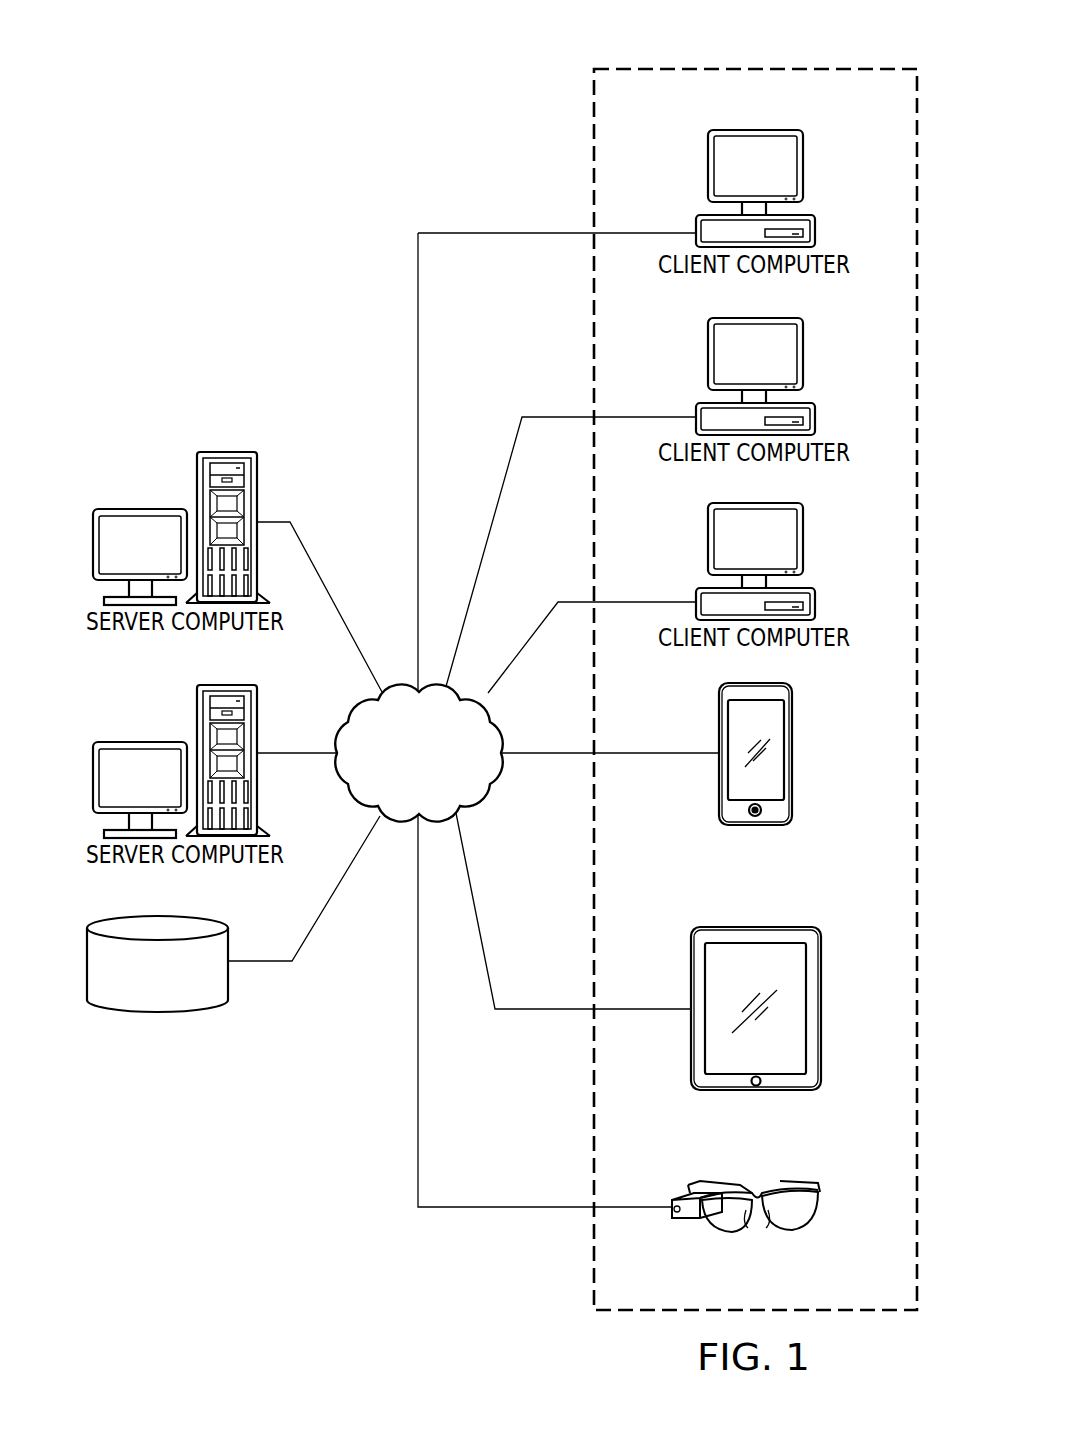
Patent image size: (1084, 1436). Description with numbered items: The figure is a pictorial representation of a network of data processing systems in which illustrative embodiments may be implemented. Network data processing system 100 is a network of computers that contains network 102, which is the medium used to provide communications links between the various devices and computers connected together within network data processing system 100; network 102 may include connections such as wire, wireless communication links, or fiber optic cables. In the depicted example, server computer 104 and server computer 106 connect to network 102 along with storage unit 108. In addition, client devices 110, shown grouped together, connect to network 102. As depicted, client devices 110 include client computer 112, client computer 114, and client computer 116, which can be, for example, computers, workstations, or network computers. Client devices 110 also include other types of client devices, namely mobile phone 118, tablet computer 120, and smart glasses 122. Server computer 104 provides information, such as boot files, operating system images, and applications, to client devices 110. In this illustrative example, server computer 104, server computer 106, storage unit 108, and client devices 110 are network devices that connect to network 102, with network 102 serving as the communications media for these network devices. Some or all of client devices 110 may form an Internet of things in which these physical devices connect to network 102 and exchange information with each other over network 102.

The network data processing system 100 is at (285, 326).
The network 102 is at (440, 787).
The server computer 104 is at (140, 509).
The server computer 106 is at (142, 742).
The storage unit 108 is at (155, 1012).
The client devices 110 is at (827, 69).
The client computer 112 is at (803, 166).
The client computer 114 is at (803, 354).
The client computer 116 is at (803, 539).
The mobile phone 118 is at (792, 770).
The tablet computer 120 is at (821, 1020).
The smart glasses 122 is at (820, 1210).